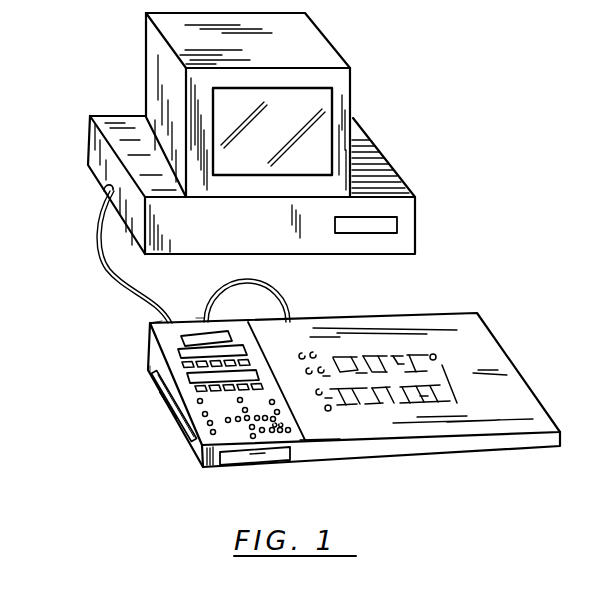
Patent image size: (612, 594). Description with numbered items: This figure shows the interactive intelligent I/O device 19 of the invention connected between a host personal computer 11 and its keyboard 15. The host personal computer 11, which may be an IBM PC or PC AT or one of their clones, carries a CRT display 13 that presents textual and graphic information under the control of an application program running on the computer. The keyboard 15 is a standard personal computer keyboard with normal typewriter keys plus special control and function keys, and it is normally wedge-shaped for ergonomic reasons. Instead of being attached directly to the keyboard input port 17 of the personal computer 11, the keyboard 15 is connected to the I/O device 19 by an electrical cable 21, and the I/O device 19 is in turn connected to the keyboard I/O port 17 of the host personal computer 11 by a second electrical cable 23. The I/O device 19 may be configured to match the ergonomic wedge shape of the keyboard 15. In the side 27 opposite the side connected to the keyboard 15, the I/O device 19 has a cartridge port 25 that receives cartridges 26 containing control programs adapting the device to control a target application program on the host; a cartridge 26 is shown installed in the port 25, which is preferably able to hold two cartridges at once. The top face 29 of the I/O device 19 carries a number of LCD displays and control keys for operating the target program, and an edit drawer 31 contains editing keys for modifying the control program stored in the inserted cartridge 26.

The host personal computer 11 is at (405, 212).
The CRT display 13 is at (350, 83).
The keyboard 15 is at (432, 428).
The keyboard input port 17 is at (104, 190).
The interactive intelligent I/O device 19 is at (149, 327).
The electrical cable 21 is at (257, 283).
The electrical cable 23 is at (105, 269).
The cartridge port 25 is at (188, 430).
The cartridge 26 is at (161, 394).
The side 27 is at (150, 366).
The top face 29 is at (195, 322).
The edit drawer 31 is at (275, 462).